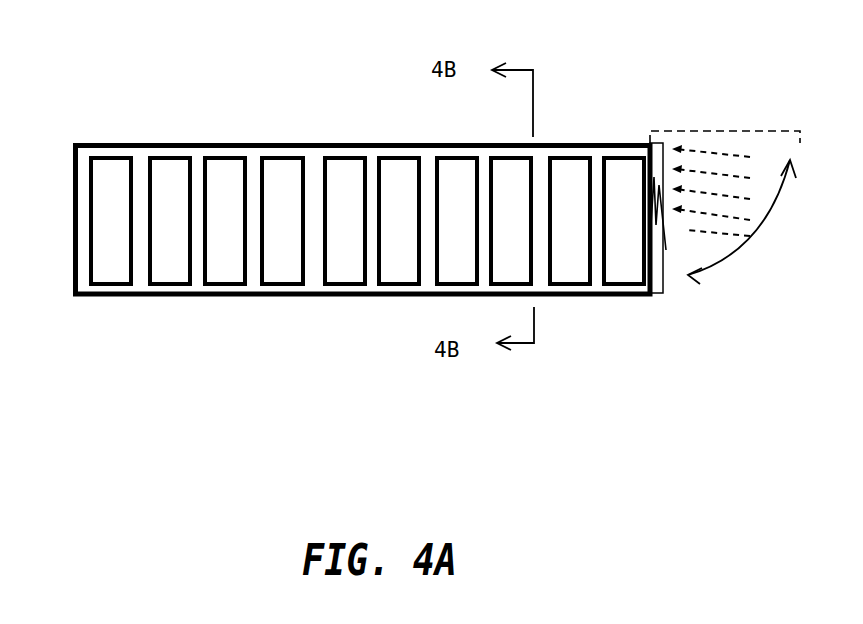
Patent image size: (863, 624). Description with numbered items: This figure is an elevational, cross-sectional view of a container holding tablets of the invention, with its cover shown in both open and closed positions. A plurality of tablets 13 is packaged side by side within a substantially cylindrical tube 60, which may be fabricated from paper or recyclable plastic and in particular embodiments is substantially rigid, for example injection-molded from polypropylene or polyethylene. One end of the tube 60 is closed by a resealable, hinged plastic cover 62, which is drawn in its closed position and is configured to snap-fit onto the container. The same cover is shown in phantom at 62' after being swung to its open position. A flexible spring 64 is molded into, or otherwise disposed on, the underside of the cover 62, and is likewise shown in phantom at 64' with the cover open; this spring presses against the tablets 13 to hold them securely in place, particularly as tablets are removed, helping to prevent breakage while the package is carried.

The substantially cylindrical tube 60 is at (143, 142).
The tablets 13 is at (115, 263).
The plastic cover 62 is at (695, 254).
The flexible spring 64 is at (650, 267).
The plastic cover in open position 62' is at (725, 104).
The flexible spring in open position 64' is at (762, 160).